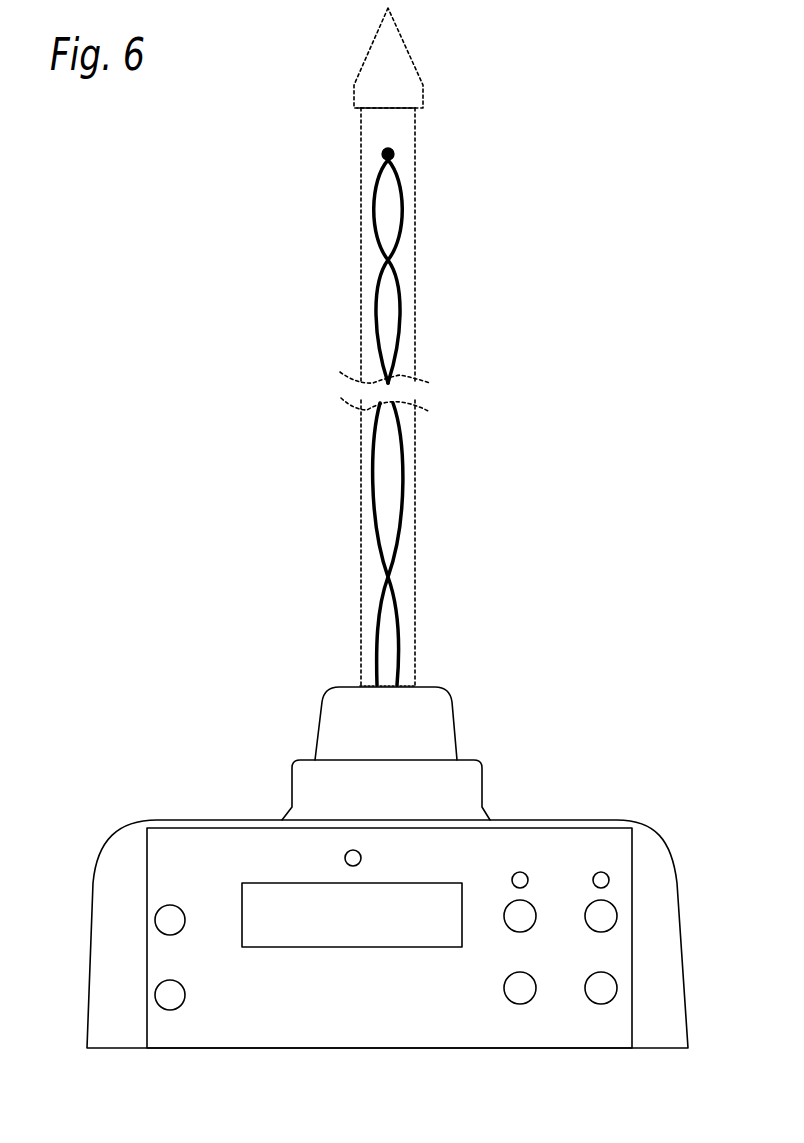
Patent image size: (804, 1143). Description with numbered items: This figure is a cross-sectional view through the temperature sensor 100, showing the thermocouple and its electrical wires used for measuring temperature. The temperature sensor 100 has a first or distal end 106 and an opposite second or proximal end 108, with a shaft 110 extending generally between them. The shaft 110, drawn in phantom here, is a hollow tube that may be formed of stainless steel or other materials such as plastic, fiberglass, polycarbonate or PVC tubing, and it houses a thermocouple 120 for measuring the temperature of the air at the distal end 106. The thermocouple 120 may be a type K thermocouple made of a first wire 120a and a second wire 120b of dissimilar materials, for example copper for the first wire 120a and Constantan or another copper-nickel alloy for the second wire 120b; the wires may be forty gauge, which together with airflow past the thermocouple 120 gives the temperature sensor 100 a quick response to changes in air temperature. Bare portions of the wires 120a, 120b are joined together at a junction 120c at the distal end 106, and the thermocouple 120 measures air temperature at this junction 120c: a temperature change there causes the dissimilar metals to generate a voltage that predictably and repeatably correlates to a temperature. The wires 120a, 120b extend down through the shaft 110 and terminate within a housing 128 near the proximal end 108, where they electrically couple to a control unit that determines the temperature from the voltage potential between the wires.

The temperature sensor 100 is at (600, 341).
The distal end 106 is at (373, 37).
The proximal end 108 is at (230, 1050).
The shaft 110 is at (361, 567).
The thermocouple 120 is at (362, 233).
The first wire 120a is at (375, 440).
The second wire 120b is at (401, 440).
The junction 120c is at (387, 118).
The housing 128 is at (292, 780).